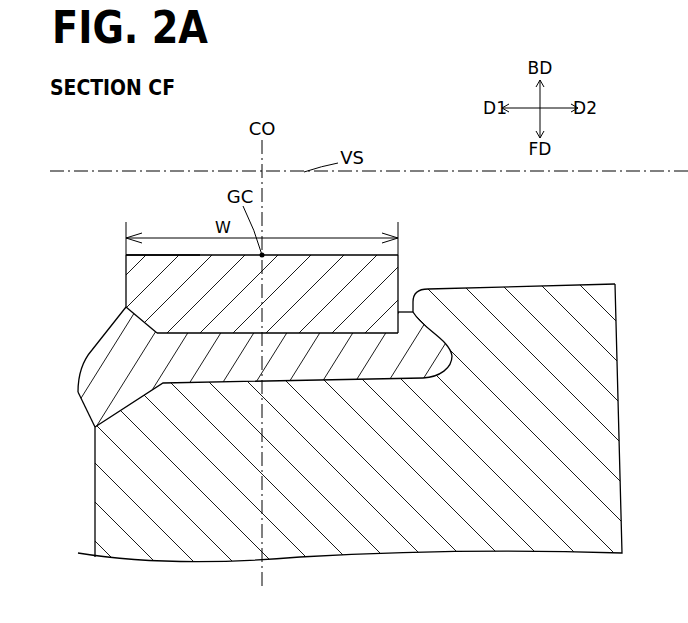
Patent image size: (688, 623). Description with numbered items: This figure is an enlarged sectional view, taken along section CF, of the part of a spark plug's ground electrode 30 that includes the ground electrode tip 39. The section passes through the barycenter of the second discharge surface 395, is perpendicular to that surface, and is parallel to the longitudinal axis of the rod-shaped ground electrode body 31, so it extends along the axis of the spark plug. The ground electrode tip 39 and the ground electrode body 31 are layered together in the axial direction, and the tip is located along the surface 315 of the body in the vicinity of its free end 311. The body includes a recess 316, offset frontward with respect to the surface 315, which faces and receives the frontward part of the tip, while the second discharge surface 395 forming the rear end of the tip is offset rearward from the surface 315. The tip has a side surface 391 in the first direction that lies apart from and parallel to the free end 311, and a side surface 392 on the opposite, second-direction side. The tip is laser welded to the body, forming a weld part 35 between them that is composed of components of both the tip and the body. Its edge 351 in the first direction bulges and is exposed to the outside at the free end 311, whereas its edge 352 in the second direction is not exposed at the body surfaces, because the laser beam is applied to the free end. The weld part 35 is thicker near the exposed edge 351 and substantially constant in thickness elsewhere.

The ground electrode 30 is at (50, 212).
The ground electrode body 31 is at (607, 415).
The free end 311 is at (95, 510).
The surface 315 is at (575, 284).
The recess 316 is at (412, 300).
The weld part 35 is at (103, 347).
The exposed edge 351 is at (78, 390).
The outer edge 352 is at (452, 360).
The ground electrode tip 39 is at (399, 268).
The side surface 391 is at (125, 262).
The side surface 392 is at (399, 292).
The second discharge surface 395 is at (145, 257).